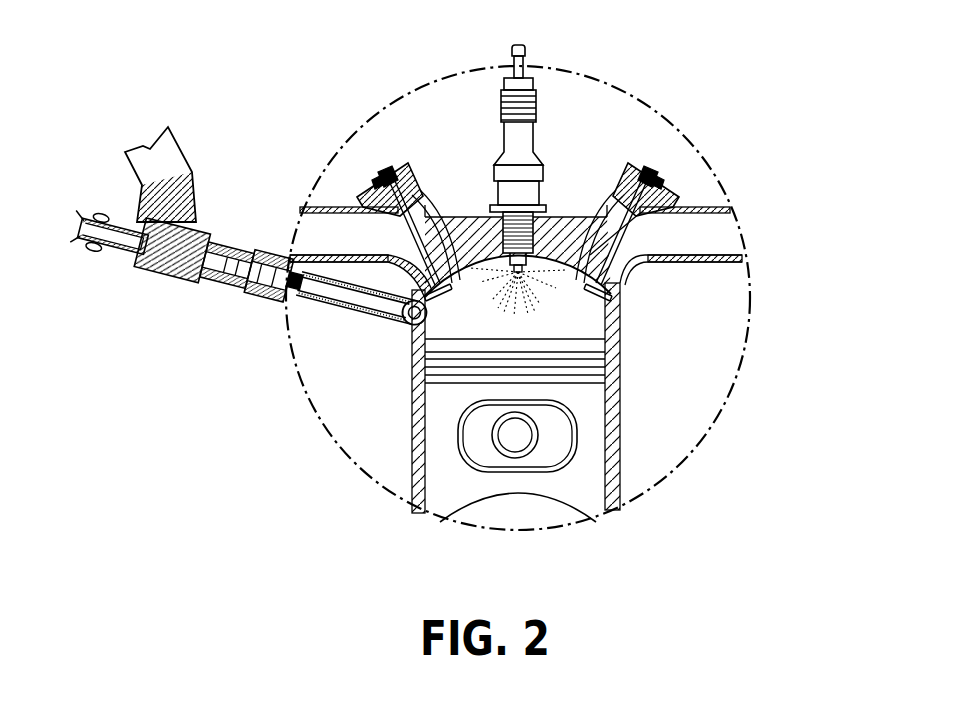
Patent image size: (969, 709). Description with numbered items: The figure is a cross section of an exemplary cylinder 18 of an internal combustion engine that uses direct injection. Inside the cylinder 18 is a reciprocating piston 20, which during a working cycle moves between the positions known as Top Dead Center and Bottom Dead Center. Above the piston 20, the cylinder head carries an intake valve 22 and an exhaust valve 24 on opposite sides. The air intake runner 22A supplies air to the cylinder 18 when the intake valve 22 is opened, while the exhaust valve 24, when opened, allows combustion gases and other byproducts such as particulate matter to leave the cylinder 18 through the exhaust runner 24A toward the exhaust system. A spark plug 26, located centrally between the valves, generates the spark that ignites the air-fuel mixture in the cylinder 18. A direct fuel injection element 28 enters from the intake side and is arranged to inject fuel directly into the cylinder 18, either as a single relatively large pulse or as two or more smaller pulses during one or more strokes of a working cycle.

The cylinder 18 is at (621, 376).
The reciprocating piston 20 is at (590, 458).
The intake valve 22 is at (387, 168).
The air intake runner 22A is at (327, 208).
The exhaust valve 24 is at (657, 172).
The exhaust runner 24A is at (687, 263).
The spark plug 26 is at (537, 120).
The direct fuel injection element 28 is at (347, 322).